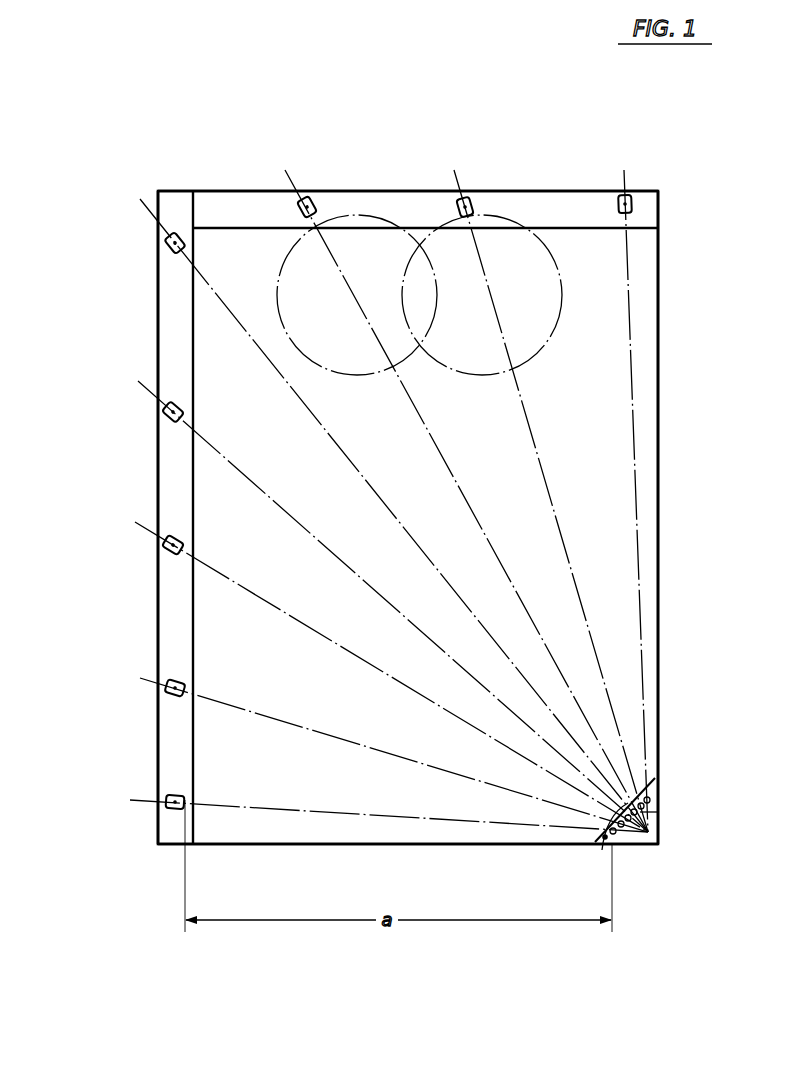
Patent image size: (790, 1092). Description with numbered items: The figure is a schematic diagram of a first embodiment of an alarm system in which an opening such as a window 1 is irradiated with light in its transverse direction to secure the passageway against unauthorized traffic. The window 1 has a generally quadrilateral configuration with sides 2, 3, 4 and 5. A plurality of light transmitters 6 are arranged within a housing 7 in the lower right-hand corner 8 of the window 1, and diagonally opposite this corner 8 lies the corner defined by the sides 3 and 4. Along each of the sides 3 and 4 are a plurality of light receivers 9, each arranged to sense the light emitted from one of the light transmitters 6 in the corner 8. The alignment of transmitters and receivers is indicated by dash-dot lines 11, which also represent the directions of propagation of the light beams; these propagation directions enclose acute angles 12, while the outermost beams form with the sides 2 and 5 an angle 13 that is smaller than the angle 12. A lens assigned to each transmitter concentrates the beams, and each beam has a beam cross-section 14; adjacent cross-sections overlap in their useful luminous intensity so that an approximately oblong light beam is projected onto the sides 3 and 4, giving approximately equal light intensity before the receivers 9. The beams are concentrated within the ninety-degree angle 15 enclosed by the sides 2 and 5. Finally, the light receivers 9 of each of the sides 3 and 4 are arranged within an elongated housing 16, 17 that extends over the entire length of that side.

The window 1 is at (590, 398).
The side 2 is at (440, 846).
The side 3 is at (157, 462).
The side 4 is at (378, 190).
The side 5 is at (661, 432).
The light transmitter 6 is at (614, 848).
The housing 7 is at (600, 845).
The lower right-hand corner 8 is at (653, 851).
The light receiver 9 is at (300, 205).
The dash-dot line 11 is at (143, 679).
The acute angle 12 is at (393, 683).
The angle 13 is at (604, 594).
The beam cross-section 14 is at (403, 364).
The angle 15 is at (657, 687).
The elongated housing 16 is at (175, 322).
The elongated housing 17 is at (543, 209).